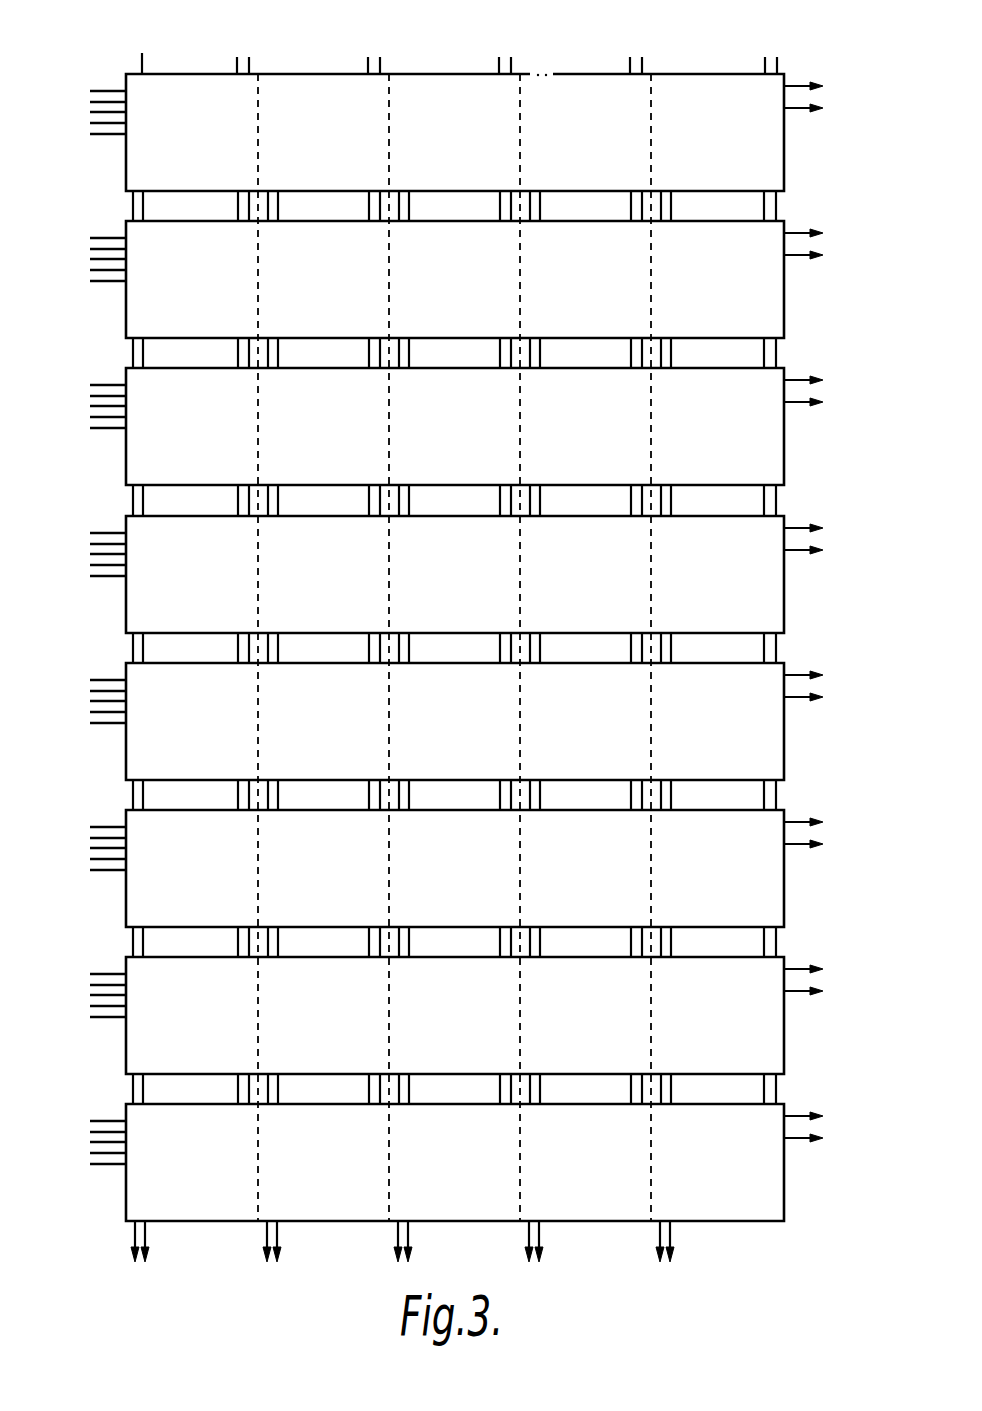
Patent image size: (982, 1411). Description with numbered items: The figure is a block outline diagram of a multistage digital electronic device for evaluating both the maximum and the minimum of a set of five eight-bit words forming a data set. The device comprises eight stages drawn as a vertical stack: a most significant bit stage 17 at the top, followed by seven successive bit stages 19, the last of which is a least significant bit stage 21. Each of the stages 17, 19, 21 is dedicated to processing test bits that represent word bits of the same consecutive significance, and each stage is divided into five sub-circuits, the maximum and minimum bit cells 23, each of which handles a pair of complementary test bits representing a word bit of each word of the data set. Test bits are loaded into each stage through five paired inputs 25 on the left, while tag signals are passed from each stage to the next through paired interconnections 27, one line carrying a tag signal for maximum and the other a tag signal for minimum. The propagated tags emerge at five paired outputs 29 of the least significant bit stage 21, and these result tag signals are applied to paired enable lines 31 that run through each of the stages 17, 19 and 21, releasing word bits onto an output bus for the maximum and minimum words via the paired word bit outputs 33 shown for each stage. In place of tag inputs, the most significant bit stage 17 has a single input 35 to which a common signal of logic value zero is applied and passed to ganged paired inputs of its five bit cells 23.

The most significant bit stage 17 is at (768, 173).
The successive bit stages 19 is at (770, 325).
The least significant bit stage 21 is at (770, 1210).
The maximum and minimum bit cells 23 is at (277, 85).
The paired inputs 25 is at (87, 117).
The paired interconnections 27 is at (132, 208).
The paired outputs 29 is at (133, 1233).
The paired enable lines 31 is at (778, 63).
The paired word bit outputs 33 is at (817, 95).
The single input 35 is at (146, 58).